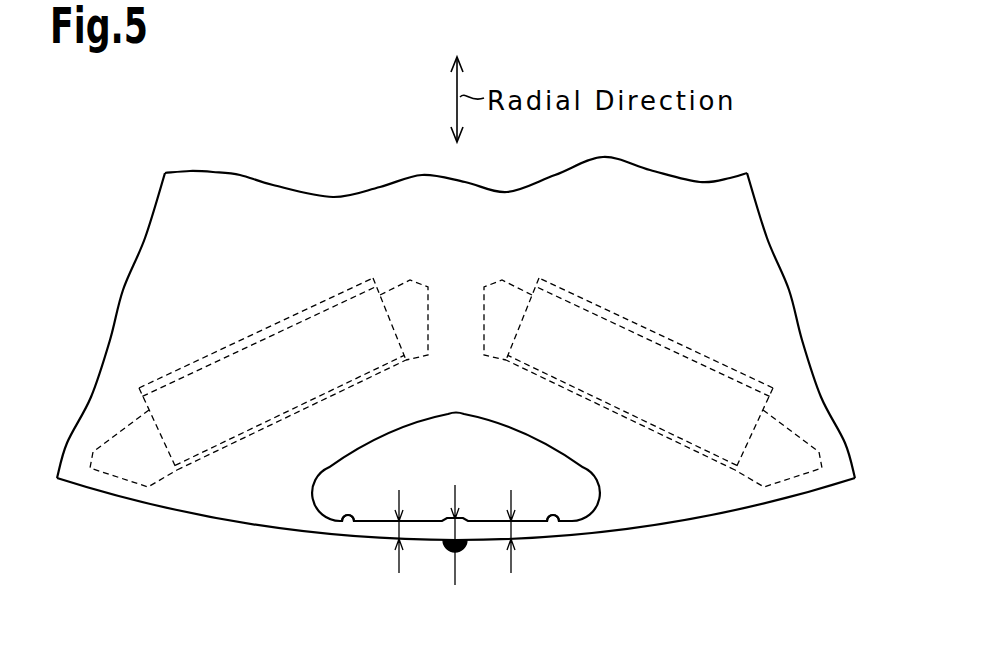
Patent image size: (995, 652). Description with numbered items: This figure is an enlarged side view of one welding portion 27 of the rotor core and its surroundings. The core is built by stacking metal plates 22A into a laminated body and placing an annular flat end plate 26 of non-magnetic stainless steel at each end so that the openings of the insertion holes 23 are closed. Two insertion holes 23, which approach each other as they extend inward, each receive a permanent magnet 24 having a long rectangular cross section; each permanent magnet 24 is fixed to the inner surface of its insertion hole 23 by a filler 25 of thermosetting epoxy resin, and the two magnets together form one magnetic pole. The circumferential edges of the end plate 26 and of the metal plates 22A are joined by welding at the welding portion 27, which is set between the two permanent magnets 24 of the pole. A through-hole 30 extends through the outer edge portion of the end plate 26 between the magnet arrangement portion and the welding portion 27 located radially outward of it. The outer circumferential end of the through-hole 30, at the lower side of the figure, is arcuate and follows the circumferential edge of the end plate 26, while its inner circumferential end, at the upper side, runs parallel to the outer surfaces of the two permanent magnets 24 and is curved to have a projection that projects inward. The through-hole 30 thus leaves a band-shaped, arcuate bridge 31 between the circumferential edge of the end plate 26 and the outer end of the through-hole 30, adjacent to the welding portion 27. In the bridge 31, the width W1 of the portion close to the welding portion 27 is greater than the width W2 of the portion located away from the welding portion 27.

The metal plate 22A is at (323, 492).
The insertion hole 23 is at (218, 372).
The permanent magnet 24 is at (272, 345).
The filler 25 is at (402, 302).
The end plate 26 is at (713, 515).
The welding portion 27 is at (460, 551).
The through-hole 30 is at (510, 444).
The bridge 31 is at (348, 519).
The width of bridge portion close to welding portion W1 is at (457, 528).
The width of bridge portion away from welding portion W2 is at (397, 535).